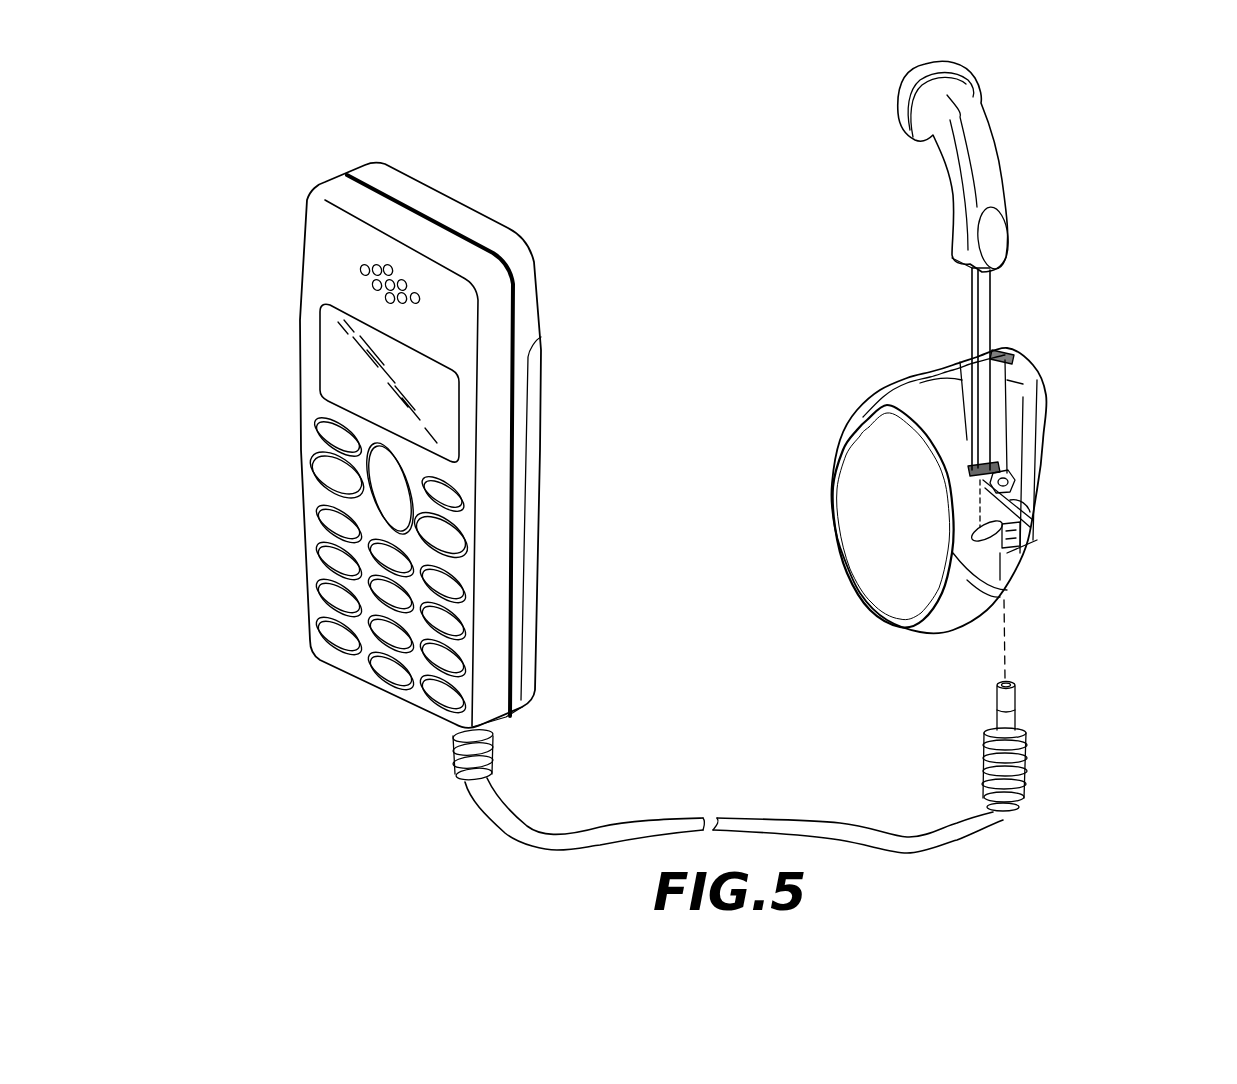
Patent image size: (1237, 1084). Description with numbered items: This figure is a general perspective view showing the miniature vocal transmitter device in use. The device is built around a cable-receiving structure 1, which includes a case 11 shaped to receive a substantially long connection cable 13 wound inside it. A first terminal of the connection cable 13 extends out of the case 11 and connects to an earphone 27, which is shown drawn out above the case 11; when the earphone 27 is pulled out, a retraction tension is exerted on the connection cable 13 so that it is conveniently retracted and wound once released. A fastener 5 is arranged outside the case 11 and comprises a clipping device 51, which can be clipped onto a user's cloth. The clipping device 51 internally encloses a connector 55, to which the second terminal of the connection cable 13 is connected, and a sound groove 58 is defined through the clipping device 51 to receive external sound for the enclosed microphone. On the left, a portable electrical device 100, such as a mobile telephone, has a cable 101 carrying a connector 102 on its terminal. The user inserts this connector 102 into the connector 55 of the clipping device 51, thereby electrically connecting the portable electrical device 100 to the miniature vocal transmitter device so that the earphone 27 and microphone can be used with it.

The cable-receiving structure 1 is at (968, 360).
The fastener 5 is at (1057, 447).
The case 11 is at (860, 617).
The connection cable 13 is at (980, 330).
The earphone 27 is at (980, 163).
The clipping device 51 is at (1043, 497).
The connector 55 is at (1037, 540).
The sound groove 58 is at (1010, 357).
The portable electrical device 100 is at (340, 560).
The cable 101 is at (667, 820).
The connector 102 is at (1007, 773).